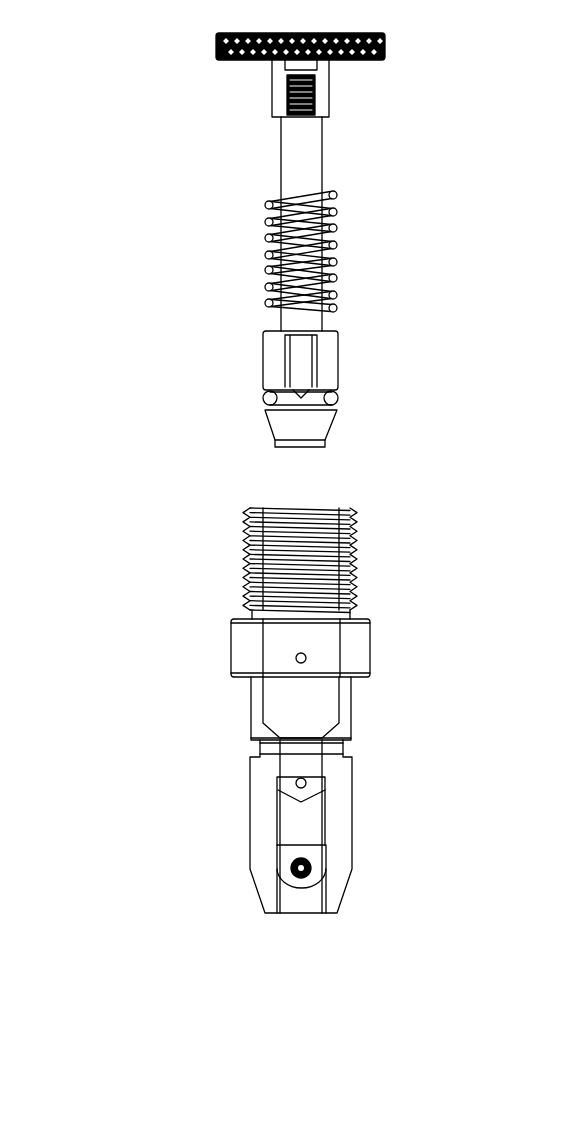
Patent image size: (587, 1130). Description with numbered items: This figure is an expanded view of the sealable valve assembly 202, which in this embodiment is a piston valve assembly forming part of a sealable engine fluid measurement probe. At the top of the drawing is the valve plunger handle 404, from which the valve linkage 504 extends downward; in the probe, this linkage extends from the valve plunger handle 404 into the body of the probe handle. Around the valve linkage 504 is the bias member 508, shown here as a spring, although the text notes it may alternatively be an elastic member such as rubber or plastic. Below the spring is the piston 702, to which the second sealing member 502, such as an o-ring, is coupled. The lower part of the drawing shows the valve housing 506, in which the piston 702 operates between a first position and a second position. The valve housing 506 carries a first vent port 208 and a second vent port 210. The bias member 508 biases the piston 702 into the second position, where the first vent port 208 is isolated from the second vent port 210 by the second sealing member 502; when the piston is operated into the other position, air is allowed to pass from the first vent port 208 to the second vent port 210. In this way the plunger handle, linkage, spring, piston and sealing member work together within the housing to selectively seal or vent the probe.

The sealable valve assembly 202 is at (100, 116).
The valve plunger handle 404 is at (385, 42).
The valve linkage 504 is at (323, 162).
The bias member 508 is at (337, 213).
The piston 702 is at (339, 361).
The second sealing member 502 is at (338, 400).
The valve housing 506 is at (371, 632).
The first vent port 208 is at (296, 656).
The second vent port 210 is at (296, 782).